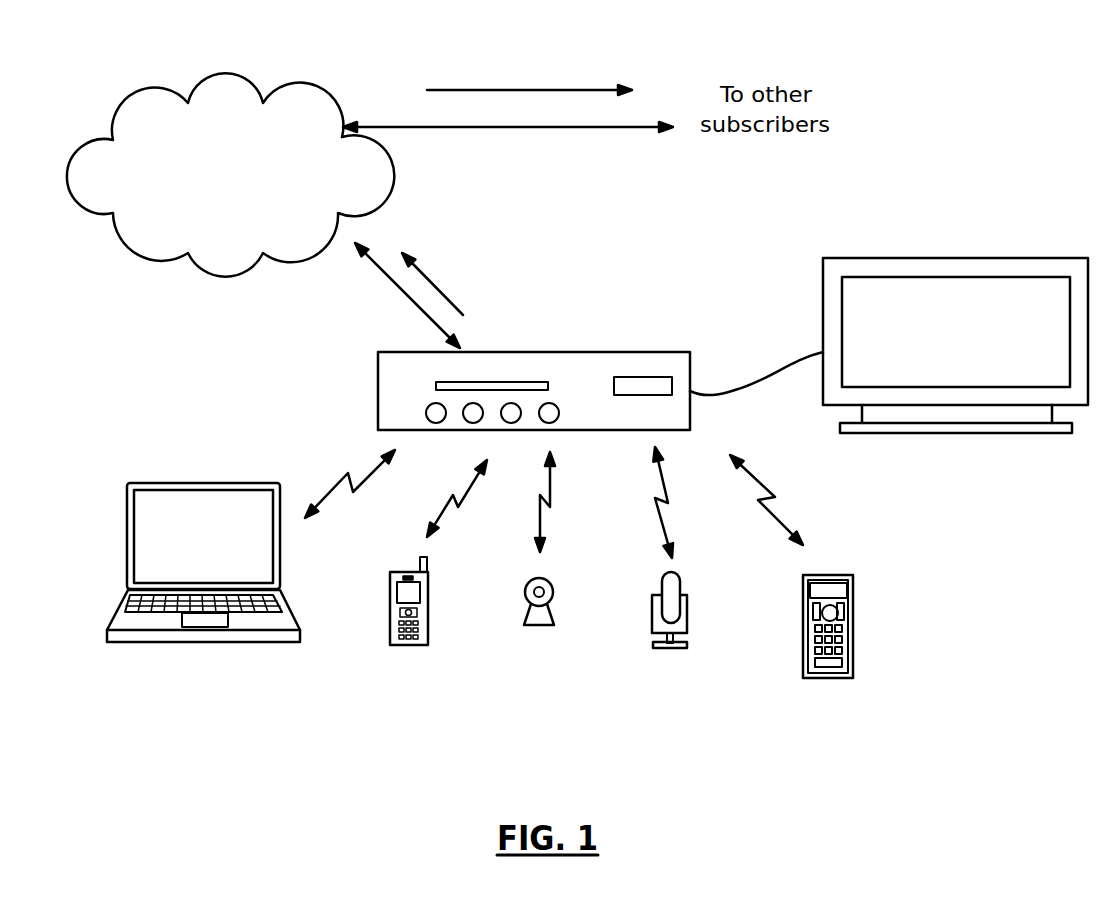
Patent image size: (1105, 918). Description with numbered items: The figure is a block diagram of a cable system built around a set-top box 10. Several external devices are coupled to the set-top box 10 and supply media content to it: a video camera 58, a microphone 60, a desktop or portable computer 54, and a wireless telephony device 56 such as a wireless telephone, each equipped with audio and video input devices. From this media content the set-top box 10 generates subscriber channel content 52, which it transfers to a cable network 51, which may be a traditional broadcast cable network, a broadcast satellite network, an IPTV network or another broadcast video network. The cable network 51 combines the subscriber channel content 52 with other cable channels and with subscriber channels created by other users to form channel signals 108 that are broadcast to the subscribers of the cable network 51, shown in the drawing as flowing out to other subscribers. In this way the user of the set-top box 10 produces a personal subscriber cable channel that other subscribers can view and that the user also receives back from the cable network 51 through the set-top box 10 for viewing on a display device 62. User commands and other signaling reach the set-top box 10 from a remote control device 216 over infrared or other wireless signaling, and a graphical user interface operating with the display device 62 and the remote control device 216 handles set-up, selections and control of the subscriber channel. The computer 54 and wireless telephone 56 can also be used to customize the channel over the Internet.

The cable network 51 is at (230, 175).
The channel signals 108 is at (529, 55).
The subscriber channel content 52 is at (491, 261).
The set-top box 10 is at (418, 381).
The display device 62 is at (884, 309).
The portable computer 54 is at (167, 529).
The wireless telephony device 56 is at (408, 676).
The video camera 58 is at (540, 676).
The microphone 60 is at (672, 676).
The remote control device 216 is at (870, 594).